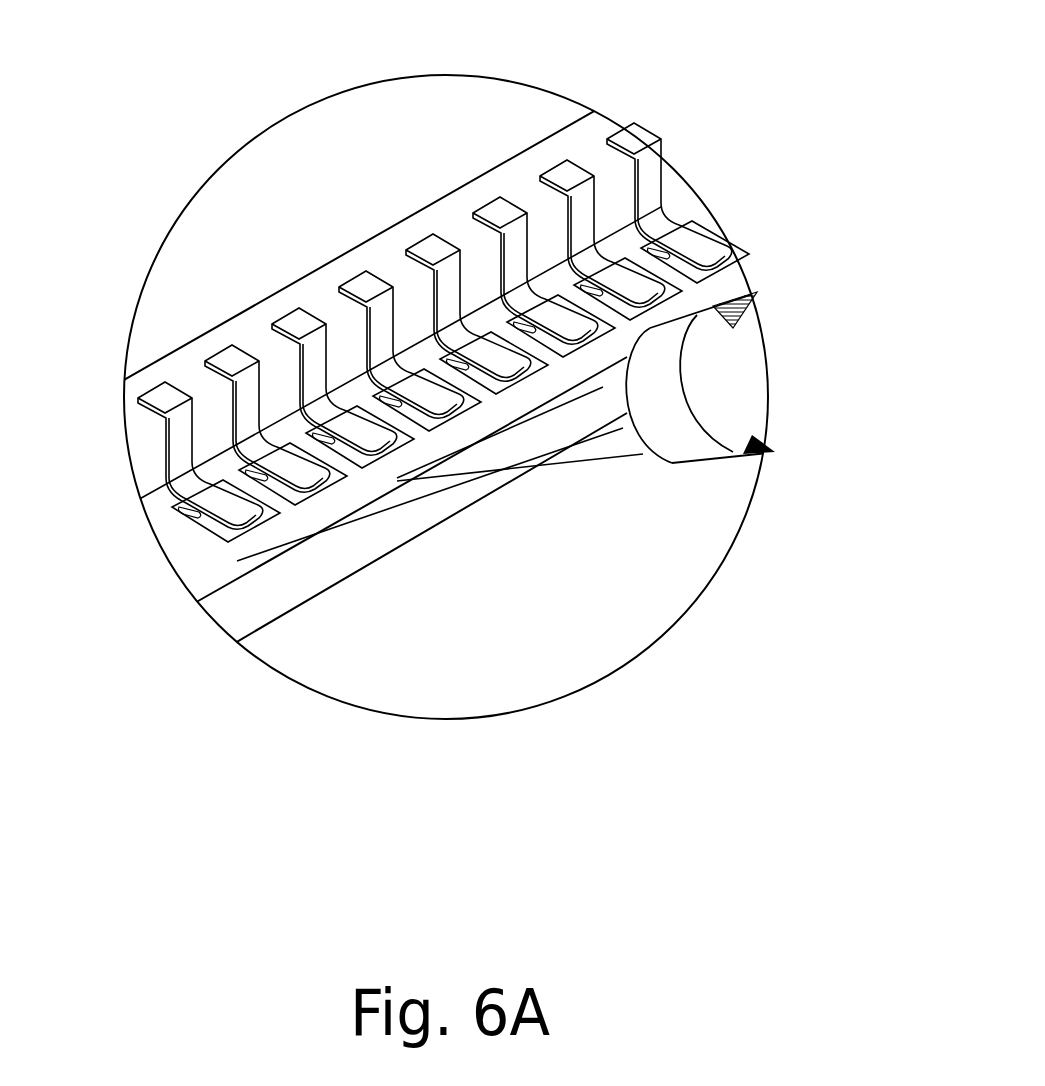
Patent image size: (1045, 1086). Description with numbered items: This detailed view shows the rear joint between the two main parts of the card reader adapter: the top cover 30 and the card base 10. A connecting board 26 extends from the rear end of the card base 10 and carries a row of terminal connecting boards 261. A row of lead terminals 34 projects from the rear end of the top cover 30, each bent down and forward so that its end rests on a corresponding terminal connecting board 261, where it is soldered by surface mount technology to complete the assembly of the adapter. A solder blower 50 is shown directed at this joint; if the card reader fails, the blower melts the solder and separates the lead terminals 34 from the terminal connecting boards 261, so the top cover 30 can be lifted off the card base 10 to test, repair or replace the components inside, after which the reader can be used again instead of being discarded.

The card base 10 is at (357, 543).
The connecting board 26 is at (197, 562).
The terminal connecting board 261 is at (742, 254).
The top cover 30 is at (237, 327).
The lead terminal 34 is at (620, 343).
The solder blower 50 is at (740, 409).